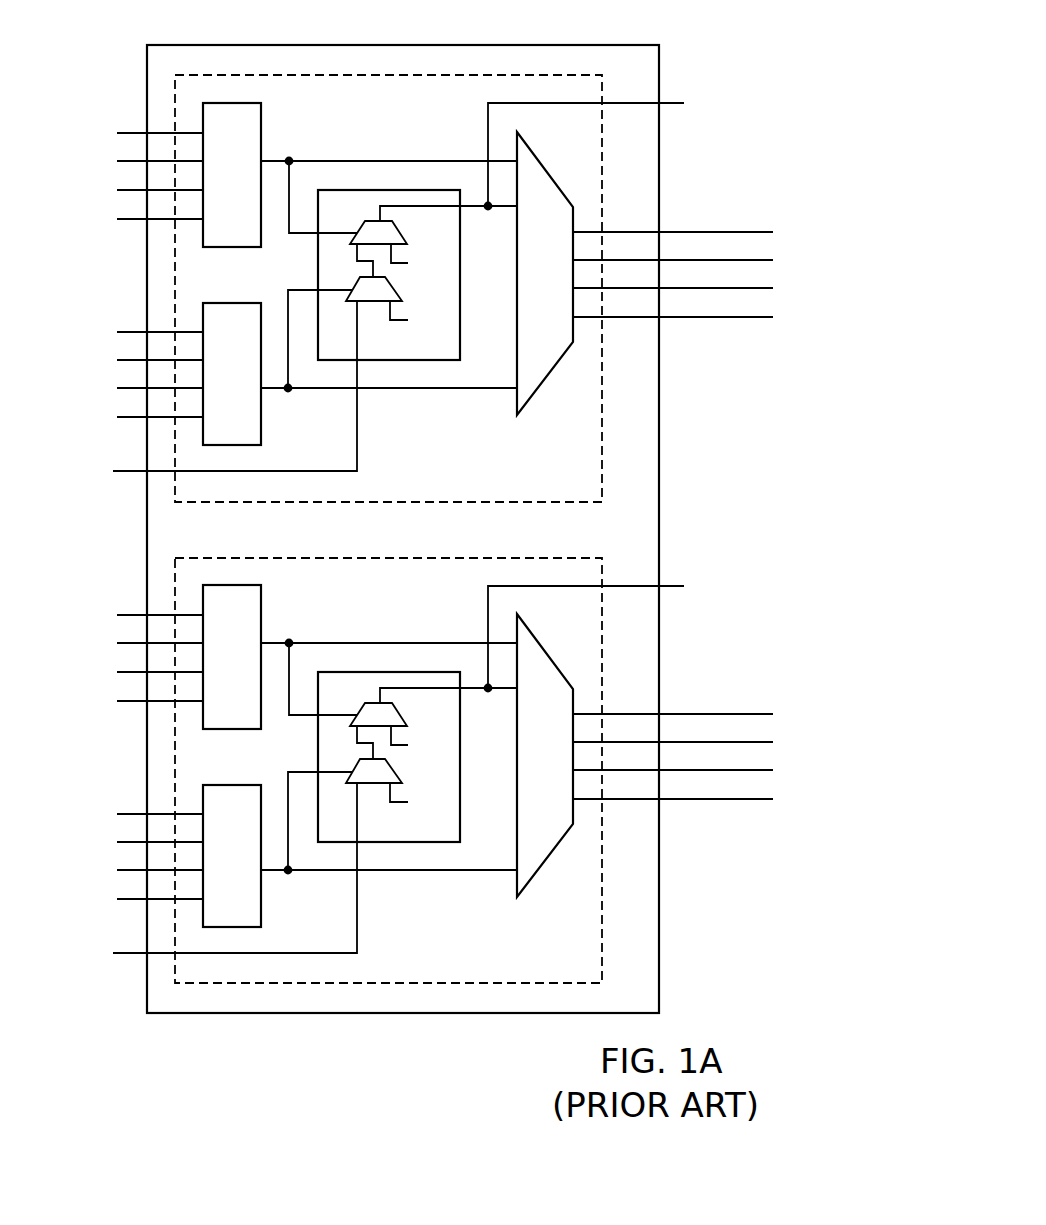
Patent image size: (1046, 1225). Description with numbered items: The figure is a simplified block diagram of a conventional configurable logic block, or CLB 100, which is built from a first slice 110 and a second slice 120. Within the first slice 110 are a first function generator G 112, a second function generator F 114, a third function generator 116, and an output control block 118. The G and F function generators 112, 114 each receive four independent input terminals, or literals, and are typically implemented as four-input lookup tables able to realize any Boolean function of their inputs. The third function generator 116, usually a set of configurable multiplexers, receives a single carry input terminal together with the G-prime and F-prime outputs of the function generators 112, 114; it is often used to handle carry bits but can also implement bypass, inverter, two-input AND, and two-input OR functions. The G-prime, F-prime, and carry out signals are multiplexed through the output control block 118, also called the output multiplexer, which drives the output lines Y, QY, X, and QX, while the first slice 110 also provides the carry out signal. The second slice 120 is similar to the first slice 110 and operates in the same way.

The configurable logic block 100 is at (403, 512).
The first slice 110 is at (428, 257).
The second slice 120 is at (428, 809).
The first function generator G 112 is at (212, 187).
The second function generator F 114 is at (212, 386).
The third function generator 116 is at (412, 287).
The output control block 118 is at (524, 286).